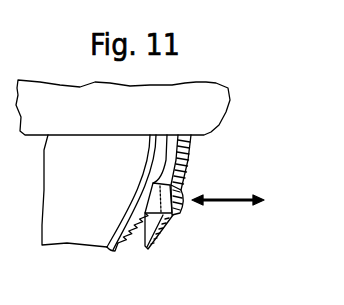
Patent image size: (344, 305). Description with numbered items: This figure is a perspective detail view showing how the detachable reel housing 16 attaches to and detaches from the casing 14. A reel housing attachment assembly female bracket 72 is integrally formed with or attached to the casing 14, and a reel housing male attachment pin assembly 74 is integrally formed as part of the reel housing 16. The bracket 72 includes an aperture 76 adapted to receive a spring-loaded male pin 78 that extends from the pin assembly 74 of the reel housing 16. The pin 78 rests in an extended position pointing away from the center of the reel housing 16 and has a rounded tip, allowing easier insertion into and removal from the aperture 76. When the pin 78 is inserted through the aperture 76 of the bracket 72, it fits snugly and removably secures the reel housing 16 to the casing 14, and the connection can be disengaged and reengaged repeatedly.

The casing 14 is at (203, 113).
The reel housing 16 is at (68, 242).
The reel housing male attachment pin assembly 74 is at (122, 248).
The aperture 76 is at (182, 193).
The spring-loaded male pin 78 is at (185, 210).
The reel housing attachment assembly female bracket 72 is at (165, 240).